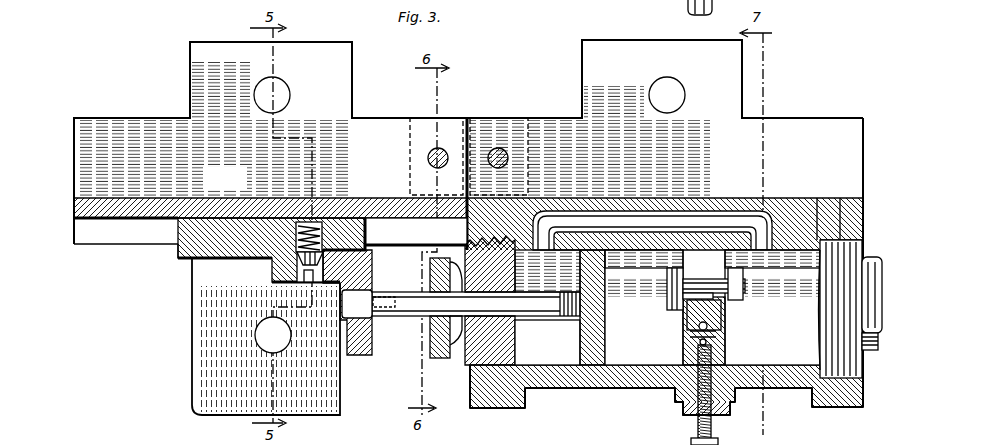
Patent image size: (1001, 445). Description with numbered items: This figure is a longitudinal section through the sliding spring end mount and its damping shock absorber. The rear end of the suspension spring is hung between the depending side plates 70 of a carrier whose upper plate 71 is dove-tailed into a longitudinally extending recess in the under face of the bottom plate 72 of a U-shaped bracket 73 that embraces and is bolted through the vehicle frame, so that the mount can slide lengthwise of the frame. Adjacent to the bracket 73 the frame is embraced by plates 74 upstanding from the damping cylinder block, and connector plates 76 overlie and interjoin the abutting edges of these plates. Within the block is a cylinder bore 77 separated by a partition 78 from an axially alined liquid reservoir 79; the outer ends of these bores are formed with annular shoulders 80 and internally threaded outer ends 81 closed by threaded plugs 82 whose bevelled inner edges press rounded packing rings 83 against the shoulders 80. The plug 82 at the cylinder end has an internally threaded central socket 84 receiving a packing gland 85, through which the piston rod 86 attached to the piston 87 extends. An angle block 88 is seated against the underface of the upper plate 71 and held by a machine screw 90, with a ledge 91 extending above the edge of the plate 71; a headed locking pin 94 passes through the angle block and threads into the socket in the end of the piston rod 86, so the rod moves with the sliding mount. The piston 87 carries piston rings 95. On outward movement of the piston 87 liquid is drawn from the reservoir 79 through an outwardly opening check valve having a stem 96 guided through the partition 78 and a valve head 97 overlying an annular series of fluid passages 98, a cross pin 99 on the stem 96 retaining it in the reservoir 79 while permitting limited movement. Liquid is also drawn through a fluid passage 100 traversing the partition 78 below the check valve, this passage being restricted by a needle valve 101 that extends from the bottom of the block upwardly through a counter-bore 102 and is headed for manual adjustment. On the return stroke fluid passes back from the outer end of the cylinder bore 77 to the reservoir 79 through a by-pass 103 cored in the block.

The side plates 70 is at (205, 313).
The upper plate 71 is at (195, 238).
The bottom plate 72 is at (205, 200).
The U-shaped bracket 73 is at (204, 109).
The plates 74 is at (728, 128).
The connector plates 76 is at (543, 126).
The cylinder bore 77 is at (628, 370).
The partition 78 is at (695, 317).
The liquid reservoir 79 is at (790, 370).
The annular shoulders 80 is at (815, 222).
The internally threaded outer ends 81 is at (838, 225).
The threaded plugs 82 is at (437, 252).
The packing rings 83 is at (830, 386).
The internally threaded central socket 84 is at (518, 278).
The packing gland 85 is at (430, 278).
The piston rod 86 is at (433, 310).
The piston 87 is at (655, 256).
The angle block 88 is at (374, 340).
The machine screw 90 is at (283, 284).
The ledge 91 is at (377, 217).
The headed locking pin 94 is at (340, 316).
The piston rings 95 is at (580, 350).
The stem 96 is at (745, 288).
The valve head 97 is at (670, 281).
The fluid passages 98 is at (686, 311).
The cross pin 99 is at (745, 280).
The fluid passage 100 is at (728, 328).
The needle valve 101 is at (714, 423).
The counter-bore 102 is at (688, 342).
The by-pass 103 is at (710, 210).